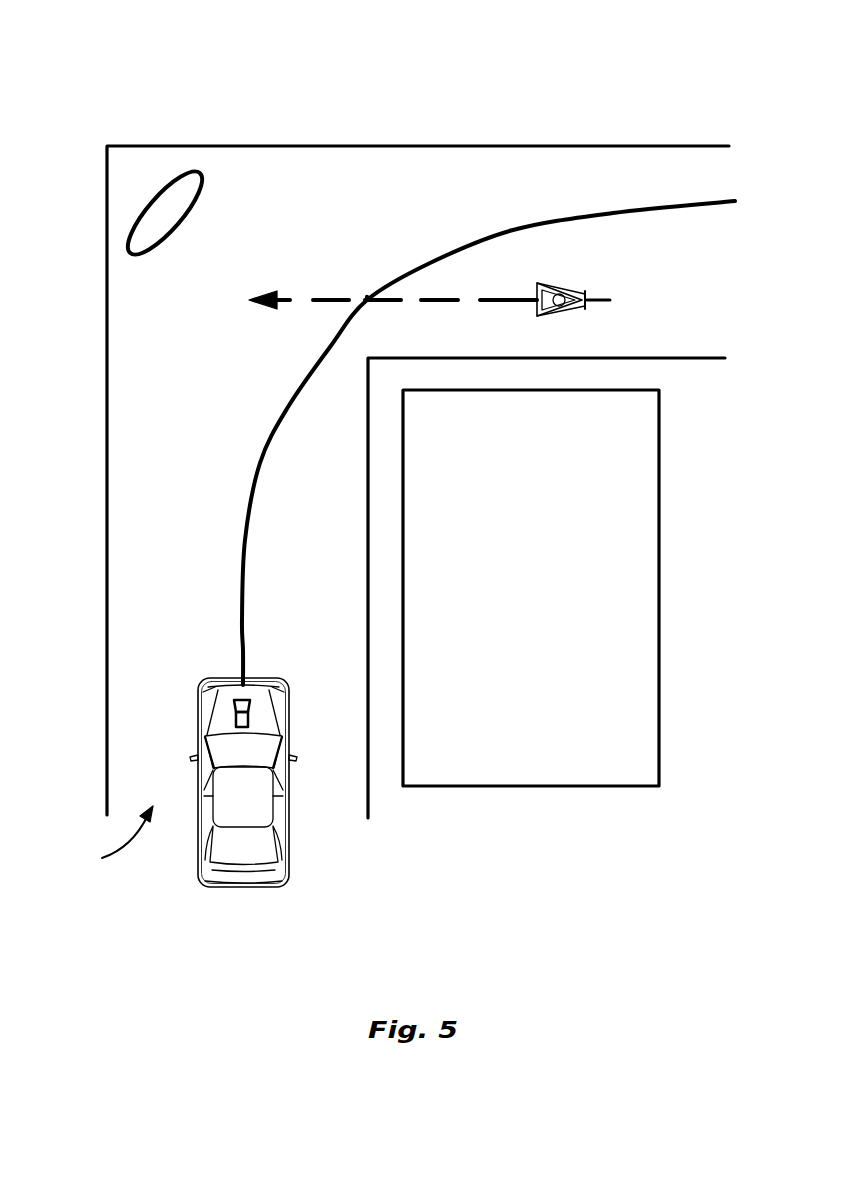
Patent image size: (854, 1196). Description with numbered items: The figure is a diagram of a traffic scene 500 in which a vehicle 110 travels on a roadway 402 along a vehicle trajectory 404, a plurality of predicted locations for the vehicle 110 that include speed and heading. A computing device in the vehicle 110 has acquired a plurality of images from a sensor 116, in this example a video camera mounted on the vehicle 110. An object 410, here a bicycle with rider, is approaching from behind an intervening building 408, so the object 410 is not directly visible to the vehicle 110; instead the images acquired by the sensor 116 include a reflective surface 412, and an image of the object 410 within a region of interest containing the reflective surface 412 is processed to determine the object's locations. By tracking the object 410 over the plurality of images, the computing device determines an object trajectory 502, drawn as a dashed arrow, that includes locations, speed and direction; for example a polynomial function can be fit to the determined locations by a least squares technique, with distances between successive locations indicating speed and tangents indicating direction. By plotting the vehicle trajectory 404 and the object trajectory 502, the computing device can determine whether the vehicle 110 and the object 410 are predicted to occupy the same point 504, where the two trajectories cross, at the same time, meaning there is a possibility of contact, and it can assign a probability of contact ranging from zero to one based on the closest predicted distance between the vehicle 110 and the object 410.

The traffic scene 500 is at (417, 30).
The vehicle 110 is at (242, 890).
The sensor 116 is at (233, 718).
The roadway 402 is at (106, 838).
The trajectory 404 is at (240, 607).
The building 408 is at (661, 680).
The object 410 is at (578, 308).
The reflective surface 412 is at (185, 228).
The trajectory 502 is at (313, 301).
The point 504 is at (363, 285).